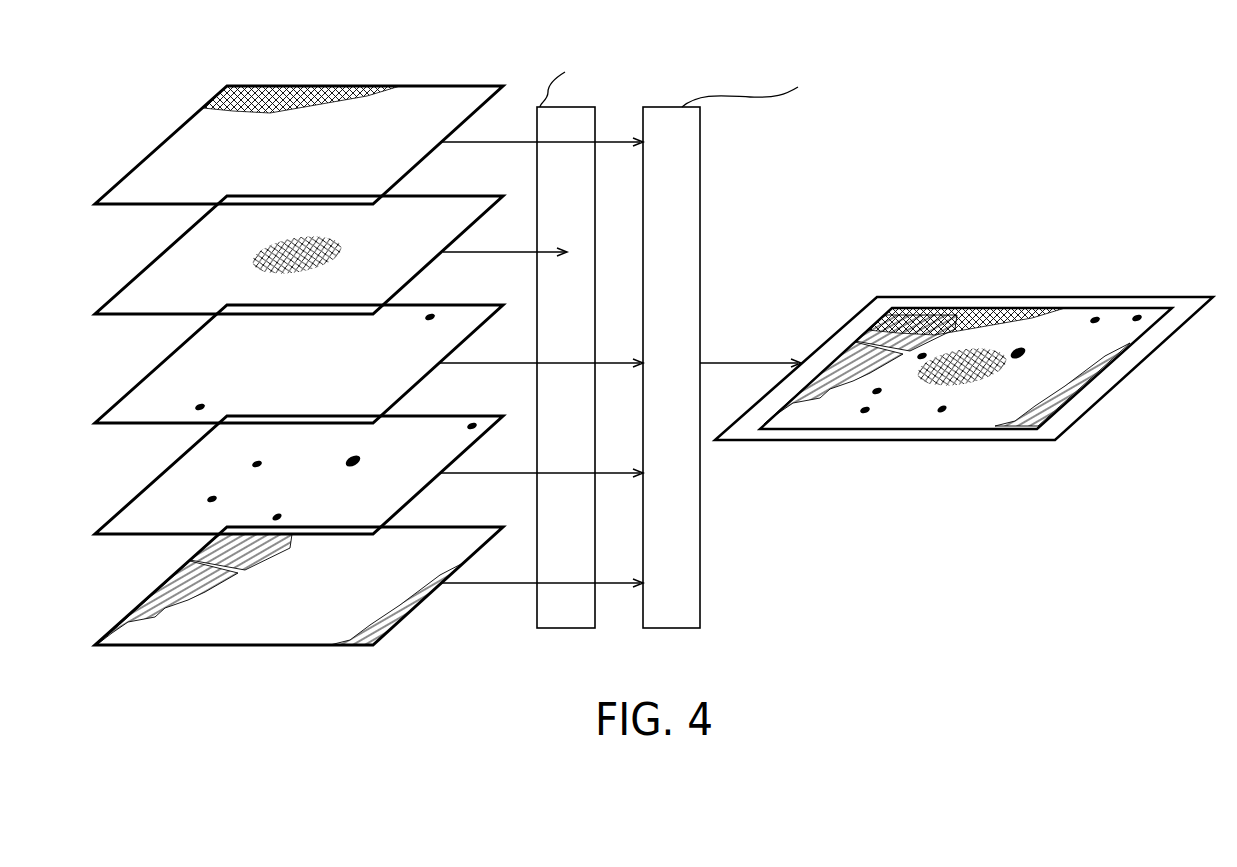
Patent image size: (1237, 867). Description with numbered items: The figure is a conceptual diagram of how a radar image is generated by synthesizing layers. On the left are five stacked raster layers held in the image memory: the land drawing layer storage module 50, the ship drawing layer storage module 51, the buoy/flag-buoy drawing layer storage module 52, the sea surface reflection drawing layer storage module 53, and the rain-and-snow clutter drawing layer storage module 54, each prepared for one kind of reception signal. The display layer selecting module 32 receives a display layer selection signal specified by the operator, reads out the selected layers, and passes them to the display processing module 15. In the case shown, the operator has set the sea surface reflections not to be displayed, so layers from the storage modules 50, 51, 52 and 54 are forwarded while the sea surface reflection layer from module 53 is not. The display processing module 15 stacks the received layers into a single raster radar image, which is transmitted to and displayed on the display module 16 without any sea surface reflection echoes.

The land drawing layer storage module 50 is at (168, 572).
The ship drawing layer storage module 51 is at (168, 464).
The buoy/flag-buoy drawing layer storage module 52 is at (168, 352).
The sea surface reflection drawing layer storage module 53 is at (168, 242).
The rain-and-snow clutter drawing layer storage module 54 is at (168, 130).
The display layer selecting module 32 is at (538, 158).
The display processing module 15 is at (700, 158).
The display module 16 is at (1060, 302).